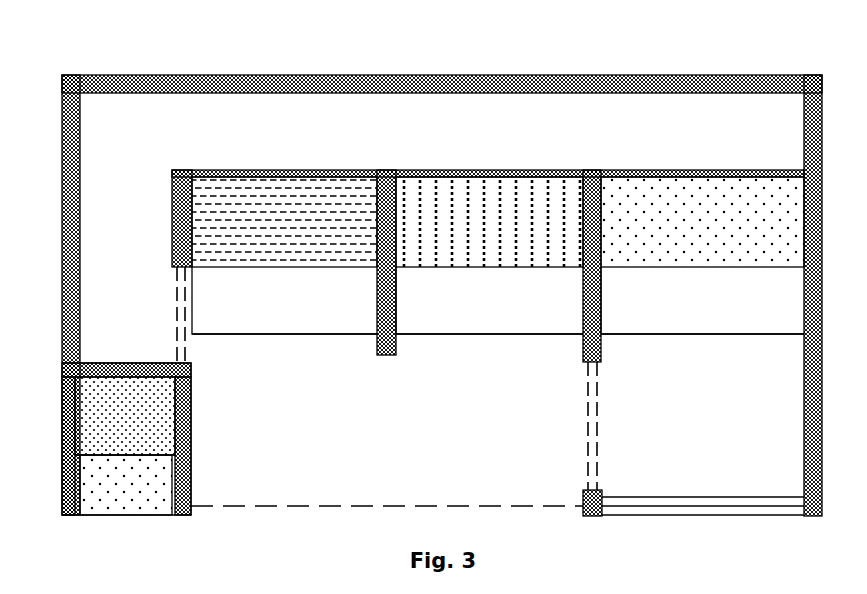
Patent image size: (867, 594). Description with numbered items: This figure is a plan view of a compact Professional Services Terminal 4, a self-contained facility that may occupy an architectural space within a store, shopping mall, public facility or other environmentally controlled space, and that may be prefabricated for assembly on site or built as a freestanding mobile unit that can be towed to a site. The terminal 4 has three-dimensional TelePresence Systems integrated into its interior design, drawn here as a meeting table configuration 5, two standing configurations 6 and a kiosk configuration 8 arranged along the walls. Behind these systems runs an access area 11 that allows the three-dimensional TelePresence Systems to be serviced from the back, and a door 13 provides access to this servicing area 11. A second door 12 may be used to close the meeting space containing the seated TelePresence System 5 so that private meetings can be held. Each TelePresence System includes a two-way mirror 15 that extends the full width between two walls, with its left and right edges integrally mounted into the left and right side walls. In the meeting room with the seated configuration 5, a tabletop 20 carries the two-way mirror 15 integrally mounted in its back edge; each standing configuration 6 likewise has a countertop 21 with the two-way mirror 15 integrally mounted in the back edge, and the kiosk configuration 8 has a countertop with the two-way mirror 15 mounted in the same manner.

The Professional Services Terminal 4 is at (310, 75).
The meeting table configuration 5 is at (731, 336).
The standing configuration 6 is at (309, 336).
The kiosk configuration 8 is at (125, 516).
The access area 11 is at (395, 132).
The door 12 is at (588, 405).
The door 13 is at (177, 348).
The two-way mirror 15 is at (308, 216).
The tabletop 20 is at (682, 295).
The countertop 21 is at (292, 295).